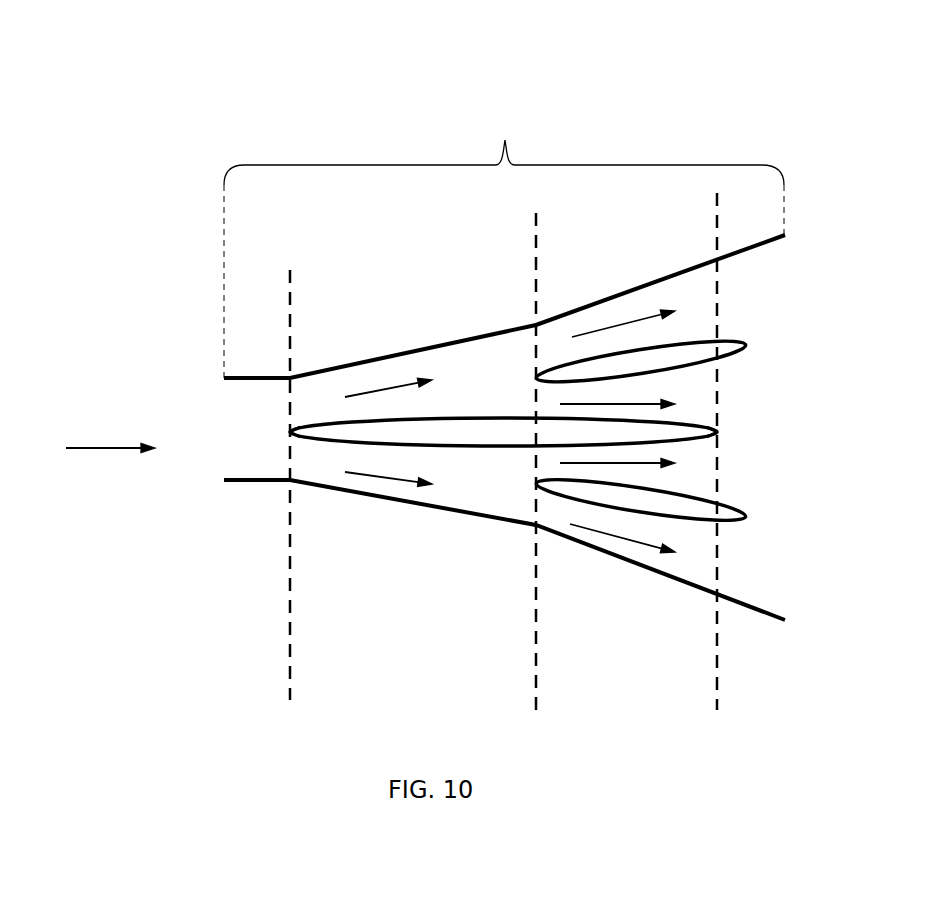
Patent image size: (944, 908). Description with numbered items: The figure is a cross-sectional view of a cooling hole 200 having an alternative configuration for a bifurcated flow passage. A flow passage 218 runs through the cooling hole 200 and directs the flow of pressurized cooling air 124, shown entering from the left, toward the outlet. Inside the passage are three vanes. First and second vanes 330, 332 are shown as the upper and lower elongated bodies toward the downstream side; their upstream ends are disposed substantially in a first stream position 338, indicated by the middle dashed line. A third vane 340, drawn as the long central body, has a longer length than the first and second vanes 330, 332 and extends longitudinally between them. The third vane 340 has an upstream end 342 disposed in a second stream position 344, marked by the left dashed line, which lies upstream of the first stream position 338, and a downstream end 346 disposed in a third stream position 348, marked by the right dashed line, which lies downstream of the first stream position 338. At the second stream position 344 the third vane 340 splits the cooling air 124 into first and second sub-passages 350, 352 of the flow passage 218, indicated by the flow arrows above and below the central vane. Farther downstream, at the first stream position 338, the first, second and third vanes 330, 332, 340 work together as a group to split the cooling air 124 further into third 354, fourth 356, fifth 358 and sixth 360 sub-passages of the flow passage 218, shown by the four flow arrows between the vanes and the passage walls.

The cooling air 124 is at (100, 446).
The cooling hole 200 is at (352, 72).
The flow passage 218 is at (505, 138).
The first vane 330 is at (700, 341).
The second vane 332 is at (750, 512).
The first stream position 338 is at (536, 655).
The third vane 340 is at (470, 418).
The upstream end 342 is at (290, 432).
The second stream position 344 is at (290, 641).
The downstream end 346 is at (717, 432).
The third stream position 348 is at (717, 663).
The first sub-passage 350 is at (372, 388).
The second sub-passage 352 is at (383, 497).
The third sub-passage 354 is at (608, 315).
The fourth sub-passage 356 is at (650, 397).
The fifth sub-passage 358 is at (650, 465).
The sixth sub-passage 360 is at (625, 540).